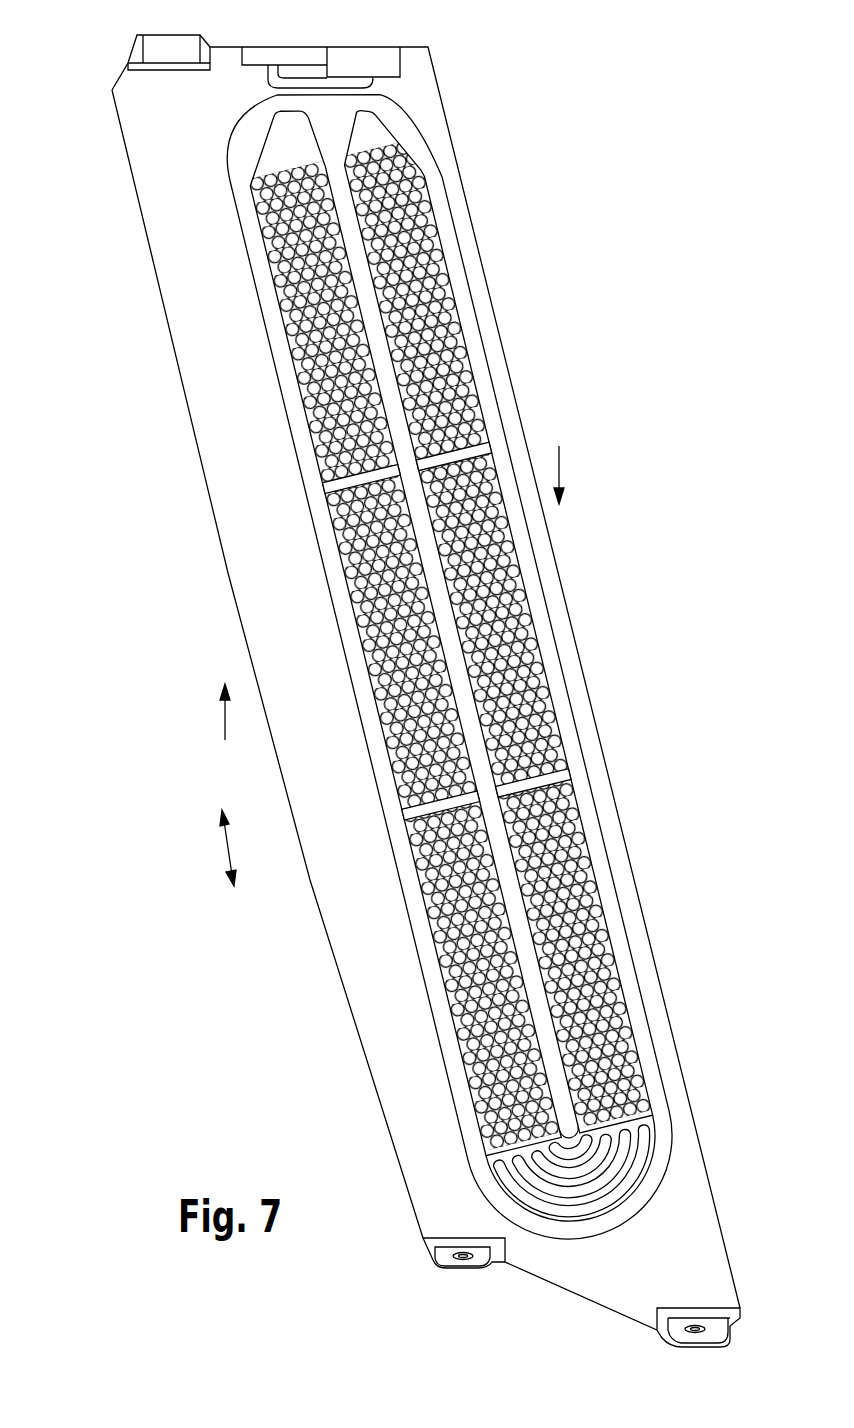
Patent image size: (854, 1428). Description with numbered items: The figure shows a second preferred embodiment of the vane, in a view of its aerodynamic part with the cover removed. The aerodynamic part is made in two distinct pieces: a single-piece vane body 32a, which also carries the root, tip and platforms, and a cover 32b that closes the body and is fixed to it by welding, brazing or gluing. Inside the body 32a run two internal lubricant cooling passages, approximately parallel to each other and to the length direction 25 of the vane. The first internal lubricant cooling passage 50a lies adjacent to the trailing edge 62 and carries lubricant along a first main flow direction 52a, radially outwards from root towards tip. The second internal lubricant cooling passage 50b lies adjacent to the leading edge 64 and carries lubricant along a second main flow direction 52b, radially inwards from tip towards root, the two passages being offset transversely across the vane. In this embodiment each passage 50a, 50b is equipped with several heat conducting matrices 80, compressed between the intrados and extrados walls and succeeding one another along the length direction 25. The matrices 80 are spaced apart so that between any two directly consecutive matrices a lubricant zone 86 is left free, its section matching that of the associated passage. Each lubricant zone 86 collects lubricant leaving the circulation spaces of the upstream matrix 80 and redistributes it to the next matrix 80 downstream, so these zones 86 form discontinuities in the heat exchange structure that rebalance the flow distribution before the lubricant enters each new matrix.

The length direction 25 is at (227, 846).
The vane body 32a is at (137, 141).
The cover 32b is at (332, 118).
The first internal lubricant cooling passage 50a is at (300, 315).
The second internal lubricant cooling passage 50b is at (432, 275).
The first main flow direction 52a is at (225, 740).
The second main flow direction 52b is at (559, 462).
The trailing edge 62 is at (170, 212).
The leading edge 64 is at (460, 213).
The heat conducting matrix 80 is at (463, 333).
The lubricant zone 86 is at (355, 487).